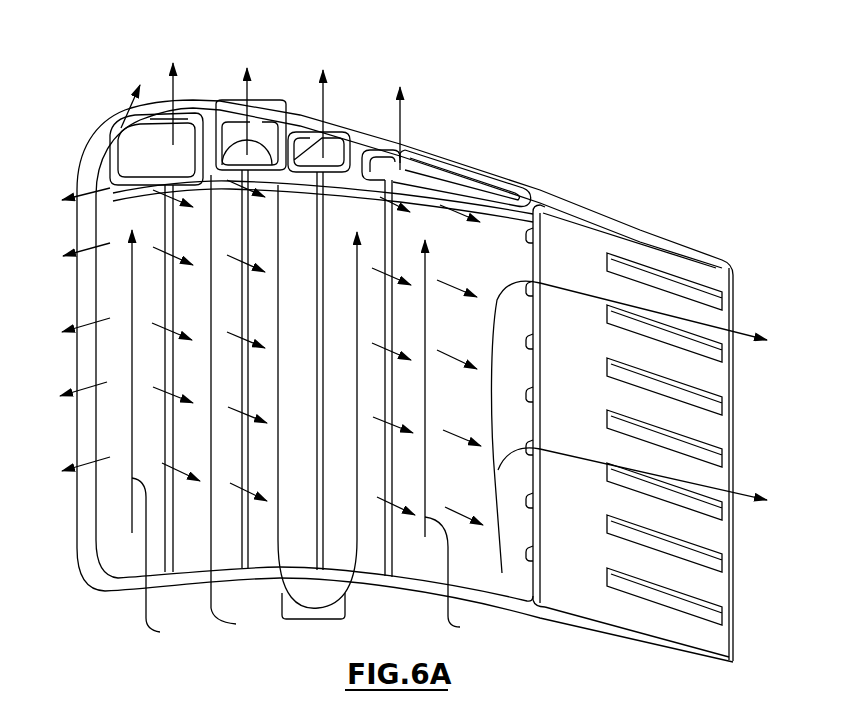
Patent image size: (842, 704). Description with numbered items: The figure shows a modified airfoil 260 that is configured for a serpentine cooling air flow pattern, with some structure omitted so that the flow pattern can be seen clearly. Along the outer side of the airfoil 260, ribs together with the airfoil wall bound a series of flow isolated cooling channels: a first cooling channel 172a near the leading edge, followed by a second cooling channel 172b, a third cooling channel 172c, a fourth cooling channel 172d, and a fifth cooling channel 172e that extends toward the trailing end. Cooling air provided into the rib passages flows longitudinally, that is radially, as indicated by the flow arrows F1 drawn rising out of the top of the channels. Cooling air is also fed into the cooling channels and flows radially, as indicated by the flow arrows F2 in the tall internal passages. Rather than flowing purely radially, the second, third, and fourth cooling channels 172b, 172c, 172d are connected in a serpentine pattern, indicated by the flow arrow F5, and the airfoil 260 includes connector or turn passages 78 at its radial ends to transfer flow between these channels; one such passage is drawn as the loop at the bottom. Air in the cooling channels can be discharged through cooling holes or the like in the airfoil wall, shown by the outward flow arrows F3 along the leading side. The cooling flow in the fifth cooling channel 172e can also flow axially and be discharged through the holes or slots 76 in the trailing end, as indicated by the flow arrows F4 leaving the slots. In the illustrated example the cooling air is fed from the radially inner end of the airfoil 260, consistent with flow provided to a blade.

The airfoil 260 is at (613, 165).
The first cooling channel 172a is at (110, 140).
The second cooling channel 172b is at (208, 118).
The third cooling channel 172c is at (287, 127).
The fourth cooling channel 172d is at (360, 148).
The fifth cooling channel 172e is at (443, 170).
The connector or turn passages 78 is at (262, 97).
The holes or slots 76 is at (730, 313).
The flow arrows F1 is at (166, 93).
The flow arrows F2 is at (309, 440).
The flow arrows F3 is at (86, 392).
The flow arrows F4 is at (651, 427).
The flow arrow F5 is at (236, 406).